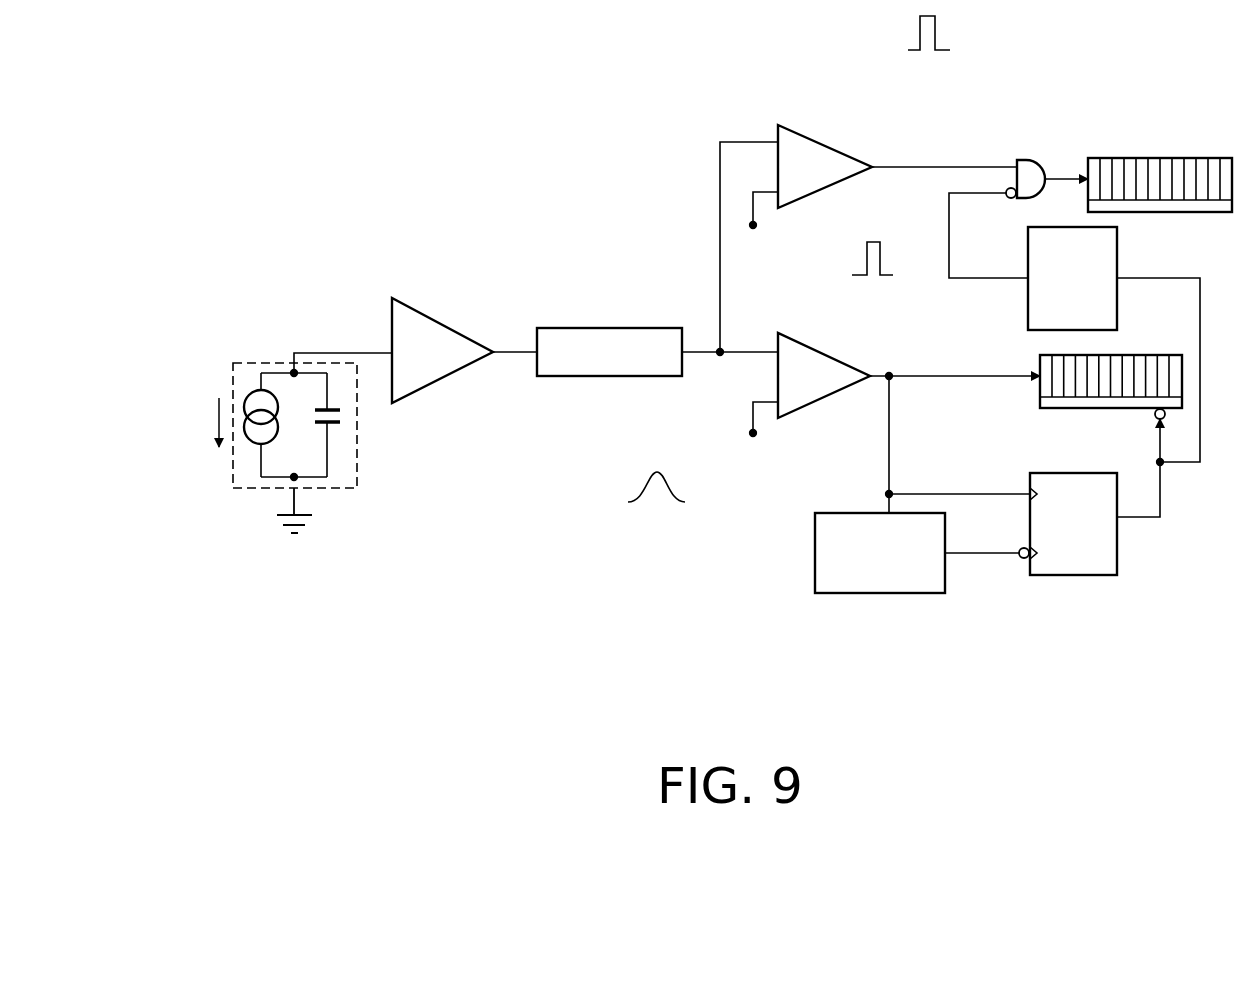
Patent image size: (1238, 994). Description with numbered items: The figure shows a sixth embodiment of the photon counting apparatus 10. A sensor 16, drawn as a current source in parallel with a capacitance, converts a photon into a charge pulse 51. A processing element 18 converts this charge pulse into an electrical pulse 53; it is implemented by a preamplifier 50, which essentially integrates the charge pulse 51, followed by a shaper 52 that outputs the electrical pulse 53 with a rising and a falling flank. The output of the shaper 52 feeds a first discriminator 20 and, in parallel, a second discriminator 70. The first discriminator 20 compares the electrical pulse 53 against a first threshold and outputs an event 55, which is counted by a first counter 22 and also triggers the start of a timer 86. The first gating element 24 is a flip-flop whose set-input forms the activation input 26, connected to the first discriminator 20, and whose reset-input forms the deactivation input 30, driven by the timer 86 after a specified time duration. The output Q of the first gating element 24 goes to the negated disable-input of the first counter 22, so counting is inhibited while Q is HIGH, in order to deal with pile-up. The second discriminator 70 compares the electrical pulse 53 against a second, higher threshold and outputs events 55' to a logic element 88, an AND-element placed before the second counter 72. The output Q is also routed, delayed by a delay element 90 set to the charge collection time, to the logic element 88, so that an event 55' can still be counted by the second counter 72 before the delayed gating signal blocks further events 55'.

The apparatus 10 is at (360, 622).
The sensor 16 is at (284, 288).
The processing element 18 is at (517, 248).
The first discriminator 20 is at (890, 423).
The first counter 22 is at (1038, 360).
The first gating element 24 is at (1118, 548).
The activation input 26 is at (1030, 483).
The deactivation input 30 is at (1030, 567).
The preamplifier 50 is at (464, 350).
The charge pulse 51 is at (390, 212).
The shaper 52 is at (657, 259).
The electrical pulse 53 is at (693, 397).
The event 55 is at (876, 296).
The event 55' is at (923, 70).
The second discriminator 70 is at (879, 192).
The second counter 72 is at (1160, 158).
The timer 86 is at (917, 553).
The logic element 88 is at (1030, 160).
The delay element 90 is at (1114, 346).